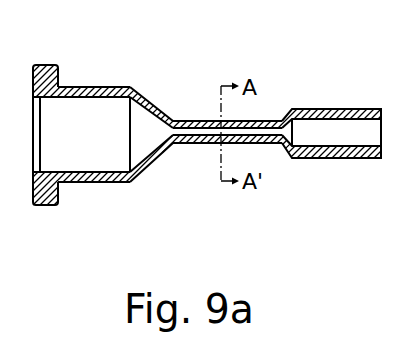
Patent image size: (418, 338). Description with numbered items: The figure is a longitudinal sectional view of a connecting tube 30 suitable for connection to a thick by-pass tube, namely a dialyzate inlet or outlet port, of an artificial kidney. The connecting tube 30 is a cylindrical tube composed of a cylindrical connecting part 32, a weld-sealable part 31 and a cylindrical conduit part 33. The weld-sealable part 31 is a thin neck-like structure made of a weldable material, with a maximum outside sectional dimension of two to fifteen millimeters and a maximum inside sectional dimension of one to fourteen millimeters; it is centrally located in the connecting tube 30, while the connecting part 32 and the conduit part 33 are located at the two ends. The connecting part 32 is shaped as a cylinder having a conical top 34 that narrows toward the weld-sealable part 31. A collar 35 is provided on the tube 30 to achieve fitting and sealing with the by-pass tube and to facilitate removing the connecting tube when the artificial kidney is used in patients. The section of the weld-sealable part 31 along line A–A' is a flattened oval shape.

The connecting tube 30 is at (212, 143).
The weld-sealable part 31 is at (258, 120).
The connecting part 32 is at (113, 86).
The conduit part 33 is at (365, 108).
The conical top 34 is at (150, 165).
The collar 35 is at (45, 206).